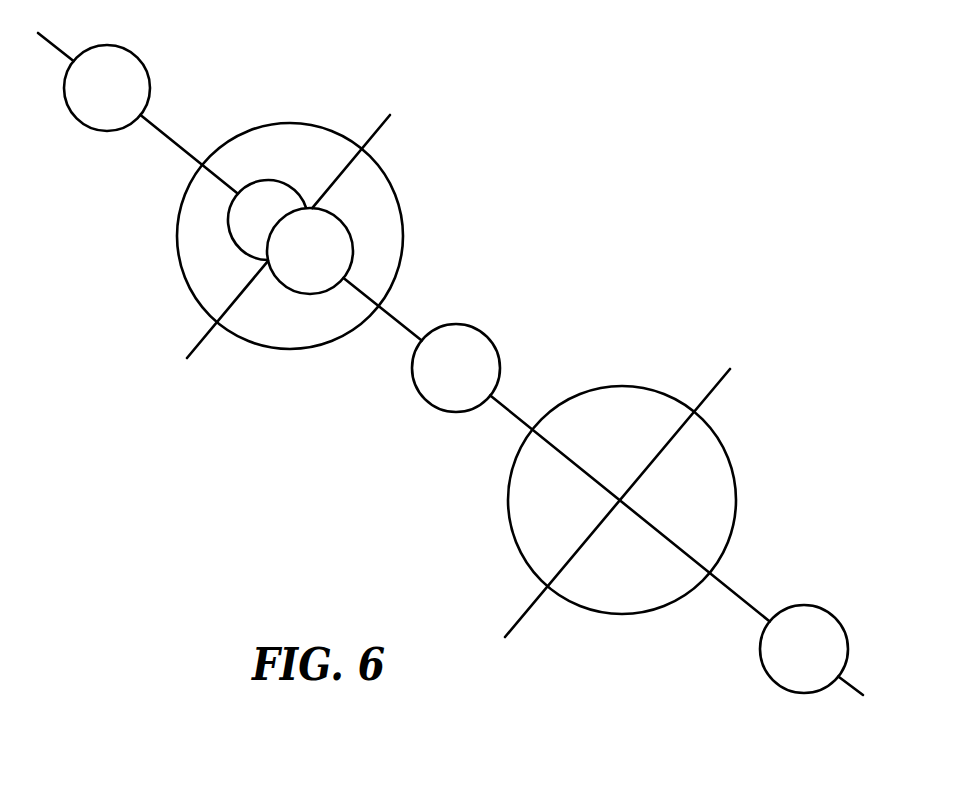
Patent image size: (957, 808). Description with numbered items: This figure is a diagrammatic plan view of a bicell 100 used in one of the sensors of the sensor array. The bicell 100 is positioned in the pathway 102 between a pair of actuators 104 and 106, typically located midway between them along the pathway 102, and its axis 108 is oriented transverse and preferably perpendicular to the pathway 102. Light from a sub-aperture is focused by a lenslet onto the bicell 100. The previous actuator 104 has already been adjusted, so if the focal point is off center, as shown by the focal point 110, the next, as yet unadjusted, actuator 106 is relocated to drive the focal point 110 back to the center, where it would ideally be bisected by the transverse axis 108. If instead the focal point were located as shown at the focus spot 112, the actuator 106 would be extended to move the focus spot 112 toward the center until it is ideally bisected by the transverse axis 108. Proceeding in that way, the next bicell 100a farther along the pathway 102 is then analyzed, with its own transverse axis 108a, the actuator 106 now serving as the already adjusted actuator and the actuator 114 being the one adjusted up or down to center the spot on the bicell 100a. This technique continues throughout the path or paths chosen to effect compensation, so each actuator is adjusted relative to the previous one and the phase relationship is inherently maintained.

The bicell 100 is at (300, 123).
The next bicell 100a is at (612, 443).
The pathway 102 is at (173, 138).
The previous actuator 104 is at (83, 126).
The next actuator 106 is at (460, 325).
The transverse axis 108 is at (382, 126).
The transverse axis of next bicell 108a is at (722, 385).
The focal point 110 is at (332, 261).
The focus spot 112 is at (279, 217).
The actuator 114 is at (807, 627).